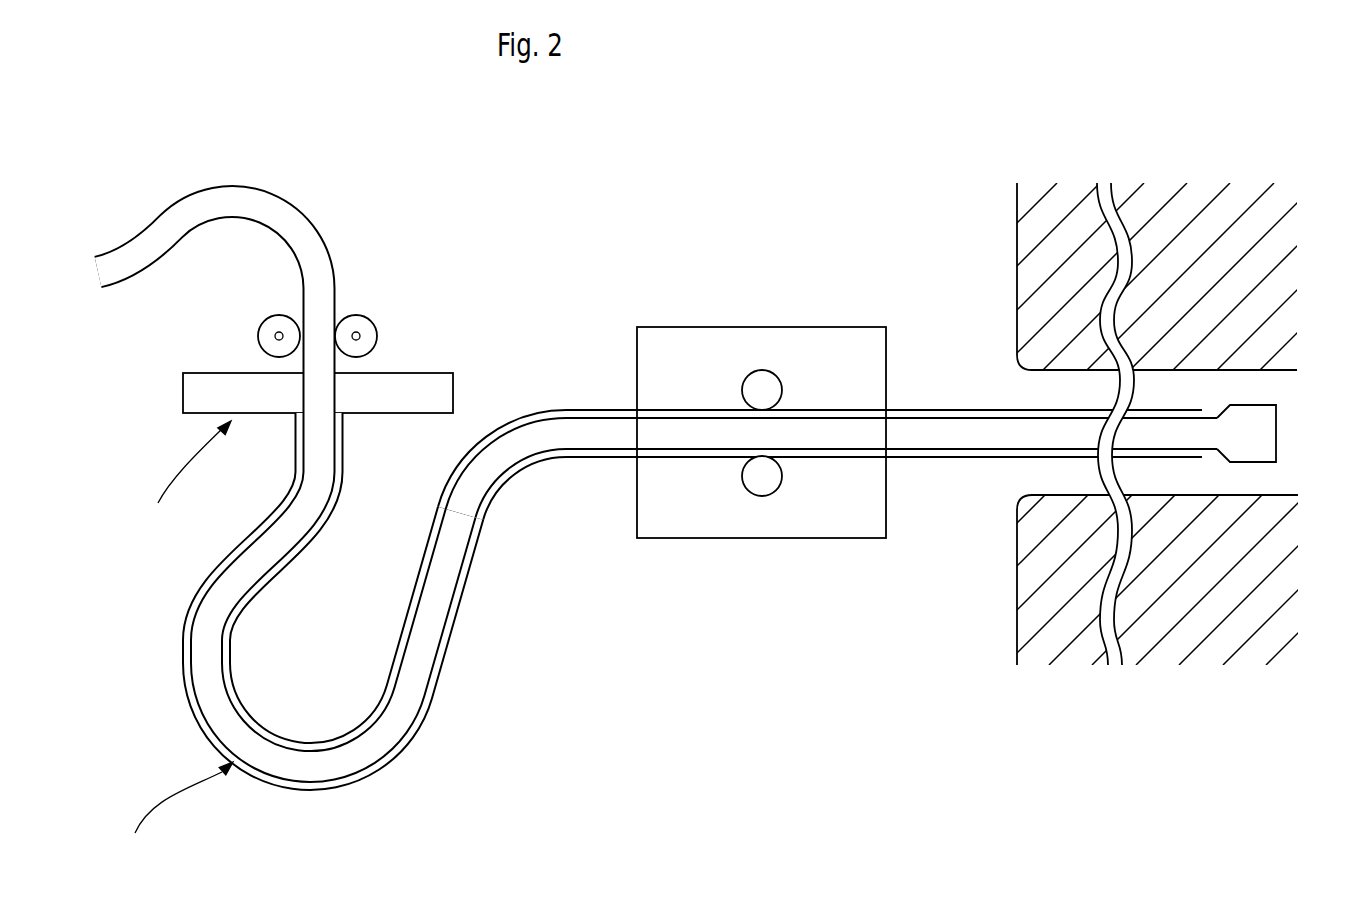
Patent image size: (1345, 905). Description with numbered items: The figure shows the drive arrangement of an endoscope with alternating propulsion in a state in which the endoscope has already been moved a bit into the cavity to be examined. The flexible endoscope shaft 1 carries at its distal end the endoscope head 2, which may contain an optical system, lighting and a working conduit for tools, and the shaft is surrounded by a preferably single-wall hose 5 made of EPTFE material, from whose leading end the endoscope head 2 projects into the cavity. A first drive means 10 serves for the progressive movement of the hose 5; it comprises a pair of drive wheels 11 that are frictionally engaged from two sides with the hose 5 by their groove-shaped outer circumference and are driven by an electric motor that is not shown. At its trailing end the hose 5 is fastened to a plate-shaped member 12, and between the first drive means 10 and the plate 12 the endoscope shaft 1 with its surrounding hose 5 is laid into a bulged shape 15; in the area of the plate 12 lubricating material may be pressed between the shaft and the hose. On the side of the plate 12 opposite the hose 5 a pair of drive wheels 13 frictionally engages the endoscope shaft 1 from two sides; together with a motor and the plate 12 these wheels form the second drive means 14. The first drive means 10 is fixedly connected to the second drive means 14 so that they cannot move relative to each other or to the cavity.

The endoscope shaft 1 is at (611, 423).
The endoscope head 2 is at (1256, 430).
The hose 5 is at (187, 621).
The first drive means 10 is at (648, 552).
The drive wheels 11 is at (760, 370).
The plate-shaped member 12 is at (205, 390).
The drive wheels 13 is at (272, 326).
The second drive means 14 is at (177, 473).
The bulged shape 15 is at (163, 812).